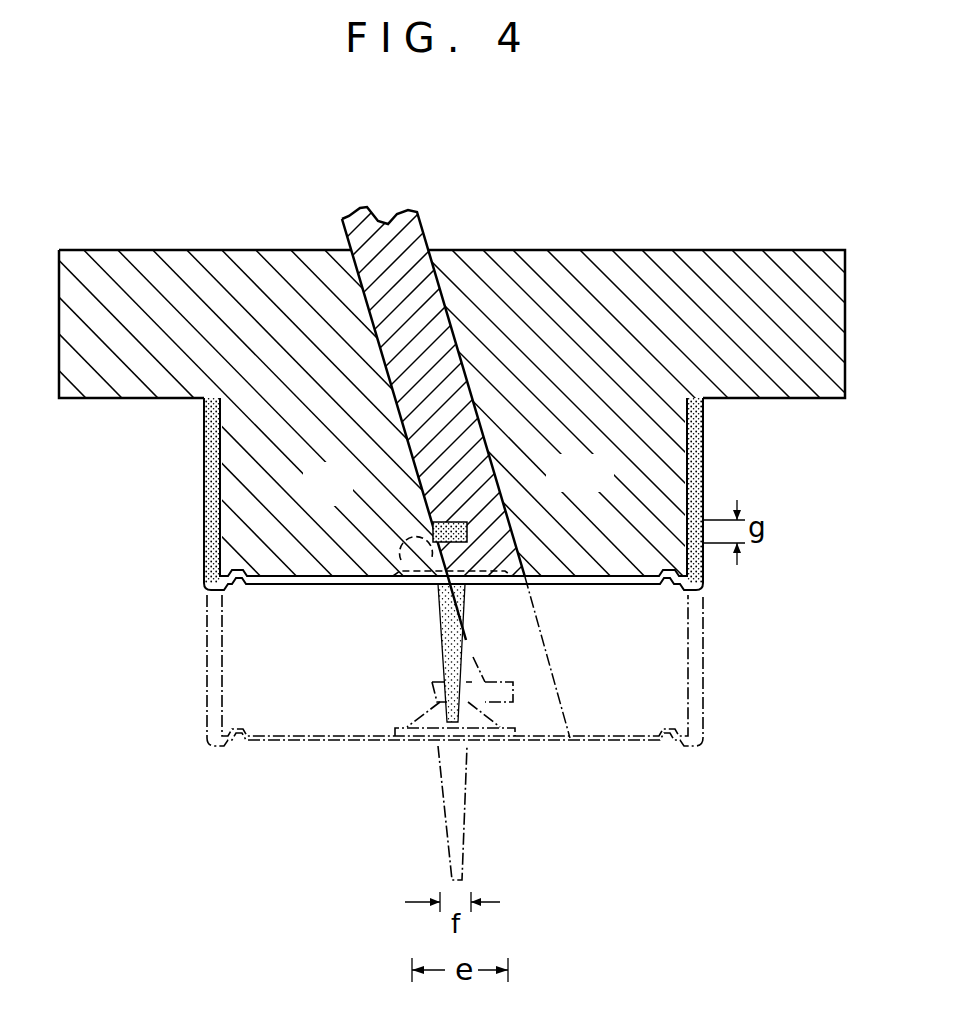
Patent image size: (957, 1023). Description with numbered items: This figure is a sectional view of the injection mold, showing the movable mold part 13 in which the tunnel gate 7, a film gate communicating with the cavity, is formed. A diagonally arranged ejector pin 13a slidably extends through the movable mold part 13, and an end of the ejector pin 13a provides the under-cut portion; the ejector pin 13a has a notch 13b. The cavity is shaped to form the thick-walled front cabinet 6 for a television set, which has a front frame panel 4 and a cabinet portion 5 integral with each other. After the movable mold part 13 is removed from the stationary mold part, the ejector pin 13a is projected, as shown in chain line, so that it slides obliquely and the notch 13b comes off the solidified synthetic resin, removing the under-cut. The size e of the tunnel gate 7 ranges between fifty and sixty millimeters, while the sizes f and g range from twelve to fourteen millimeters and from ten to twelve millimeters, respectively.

The movable mold part 13 is at (625, 270).
The ejector pin 13a is at (408, 237).
The notch 13b is at (453, 521).
The tunnel gate 7 is at (423, 537).
The front cabinet 6 is at (207, 690).
The cabinet portion 5 is at (703, 652).
The front frame panel 4 is at (373, 747).